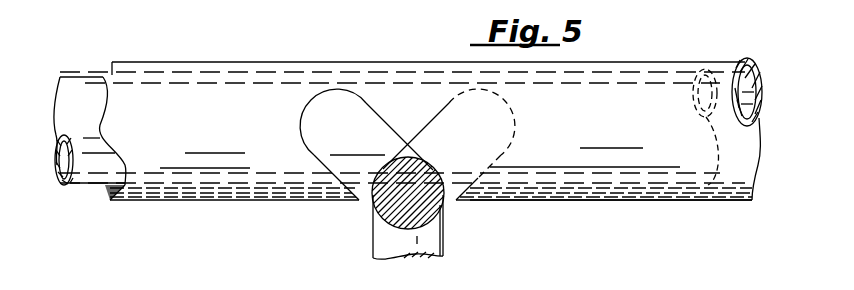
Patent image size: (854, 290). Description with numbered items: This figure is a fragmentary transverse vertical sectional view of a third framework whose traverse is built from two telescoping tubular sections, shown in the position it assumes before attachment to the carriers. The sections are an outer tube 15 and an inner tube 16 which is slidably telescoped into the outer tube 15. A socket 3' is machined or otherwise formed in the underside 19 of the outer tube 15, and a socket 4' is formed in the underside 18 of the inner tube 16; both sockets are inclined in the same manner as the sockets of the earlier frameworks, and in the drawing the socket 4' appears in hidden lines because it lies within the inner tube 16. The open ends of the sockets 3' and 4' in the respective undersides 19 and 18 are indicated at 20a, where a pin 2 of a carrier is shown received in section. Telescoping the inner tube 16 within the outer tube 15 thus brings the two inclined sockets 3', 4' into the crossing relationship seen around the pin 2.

The outer tube 15 is at (200, 70).
The inner tube 16 is at (79, 88).
The underside of inner tube 18 is at (632, 184).
The underside of outer tube 19 is at (598, 201).
The socket 3' is at (356, 144).
The socket 4' is at (461, 144).
The pin 2 is at (424, 212).
The open ends of the sockets 20a is at (365, 183).